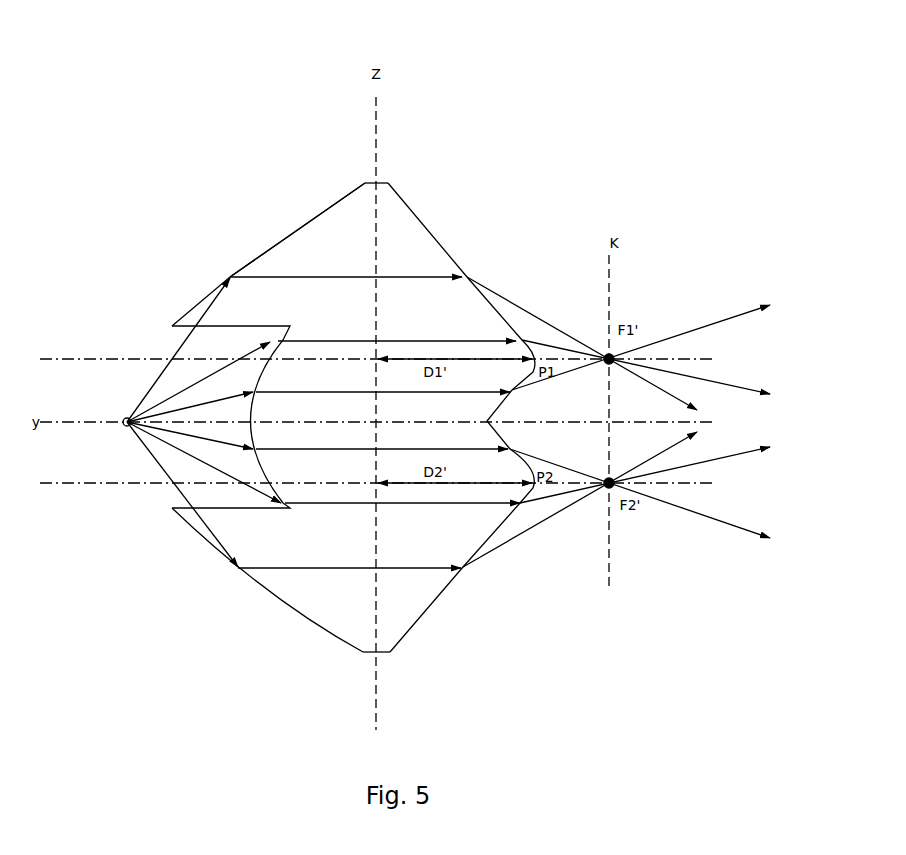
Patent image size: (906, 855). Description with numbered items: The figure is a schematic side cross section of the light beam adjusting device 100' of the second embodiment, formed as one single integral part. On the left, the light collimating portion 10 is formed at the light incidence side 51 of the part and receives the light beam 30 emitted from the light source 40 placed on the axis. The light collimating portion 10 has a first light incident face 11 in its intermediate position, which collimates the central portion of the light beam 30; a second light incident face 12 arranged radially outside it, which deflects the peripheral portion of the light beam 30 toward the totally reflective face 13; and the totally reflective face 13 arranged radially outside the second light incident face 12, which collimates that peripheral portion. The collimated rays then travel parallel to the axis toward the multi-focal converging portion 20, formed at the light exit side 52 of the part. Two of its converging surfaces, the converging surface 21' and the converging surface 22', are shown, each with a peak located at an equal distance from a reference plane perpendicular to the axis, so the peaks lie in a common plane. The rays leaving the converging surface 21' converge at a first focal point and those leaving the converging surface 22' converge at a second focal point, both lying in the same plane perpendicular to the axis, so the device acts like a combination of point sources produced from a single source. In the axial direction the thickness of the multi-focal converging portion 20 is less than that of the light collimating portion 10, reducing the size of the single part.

The light beam adjusting device 100' is at (339, 345).
The light collimating portion 10 is at (214, 417).
The first light incident face 11 is at (273, 489).
The second light incident face 12 is at (235, 326).
The totally reflective face 13 is at (247, 260).
The multi-focal converging portion 20 is at (489, 422).
The converging surface 21' is at (461, 286).
The converging surface 22' is at (462, 550).
The light beam 30 is at (157, 388).
The light source 40 is at (125, 425).
The light incidence side 51 is at (148, 512).
The light exit side 52 is at (500, 613).